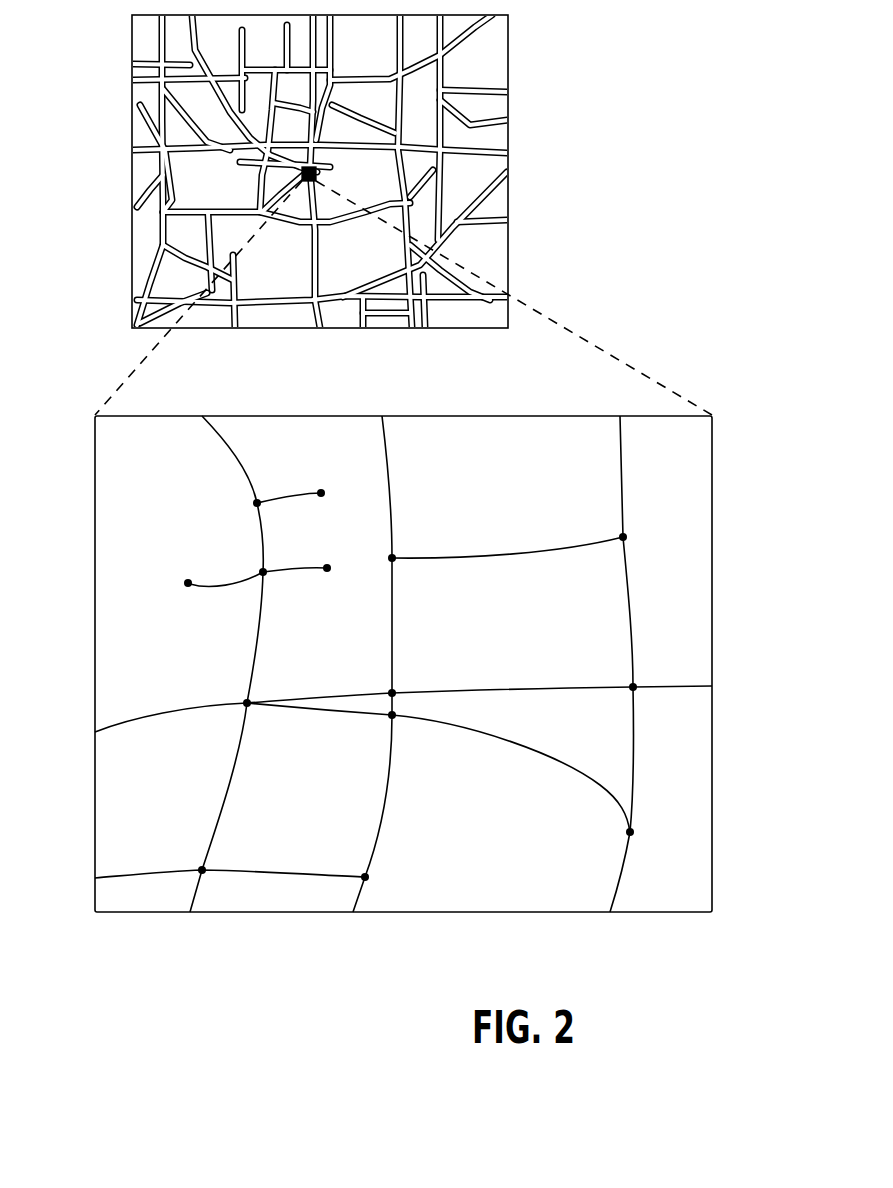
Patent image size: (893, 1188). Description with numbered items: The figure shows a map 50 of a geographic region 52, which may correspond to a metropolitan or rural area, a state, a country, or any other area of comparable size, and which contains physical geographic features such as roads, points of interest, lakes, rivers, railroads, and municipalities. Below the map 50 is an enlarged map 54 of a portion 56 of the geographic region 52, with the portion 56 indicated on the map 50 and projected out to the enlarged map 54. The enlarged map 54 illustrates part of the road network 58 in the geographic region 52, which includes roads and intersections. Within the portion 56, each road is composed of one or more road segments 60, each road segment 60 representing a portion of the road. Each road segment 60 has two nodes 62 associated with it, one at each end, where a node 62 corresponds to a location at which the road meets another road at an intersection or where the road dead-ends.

The map 50 is at (112, 78).
The geographic region 52 is at (414, 48).
The enlarged map 54 is at (723, 509).
The portion 56 is at (481, 884).
The road network 58 is at (187, 723).
The road segment 60 is at (243, 600).
The node 62 is at (189, 568).